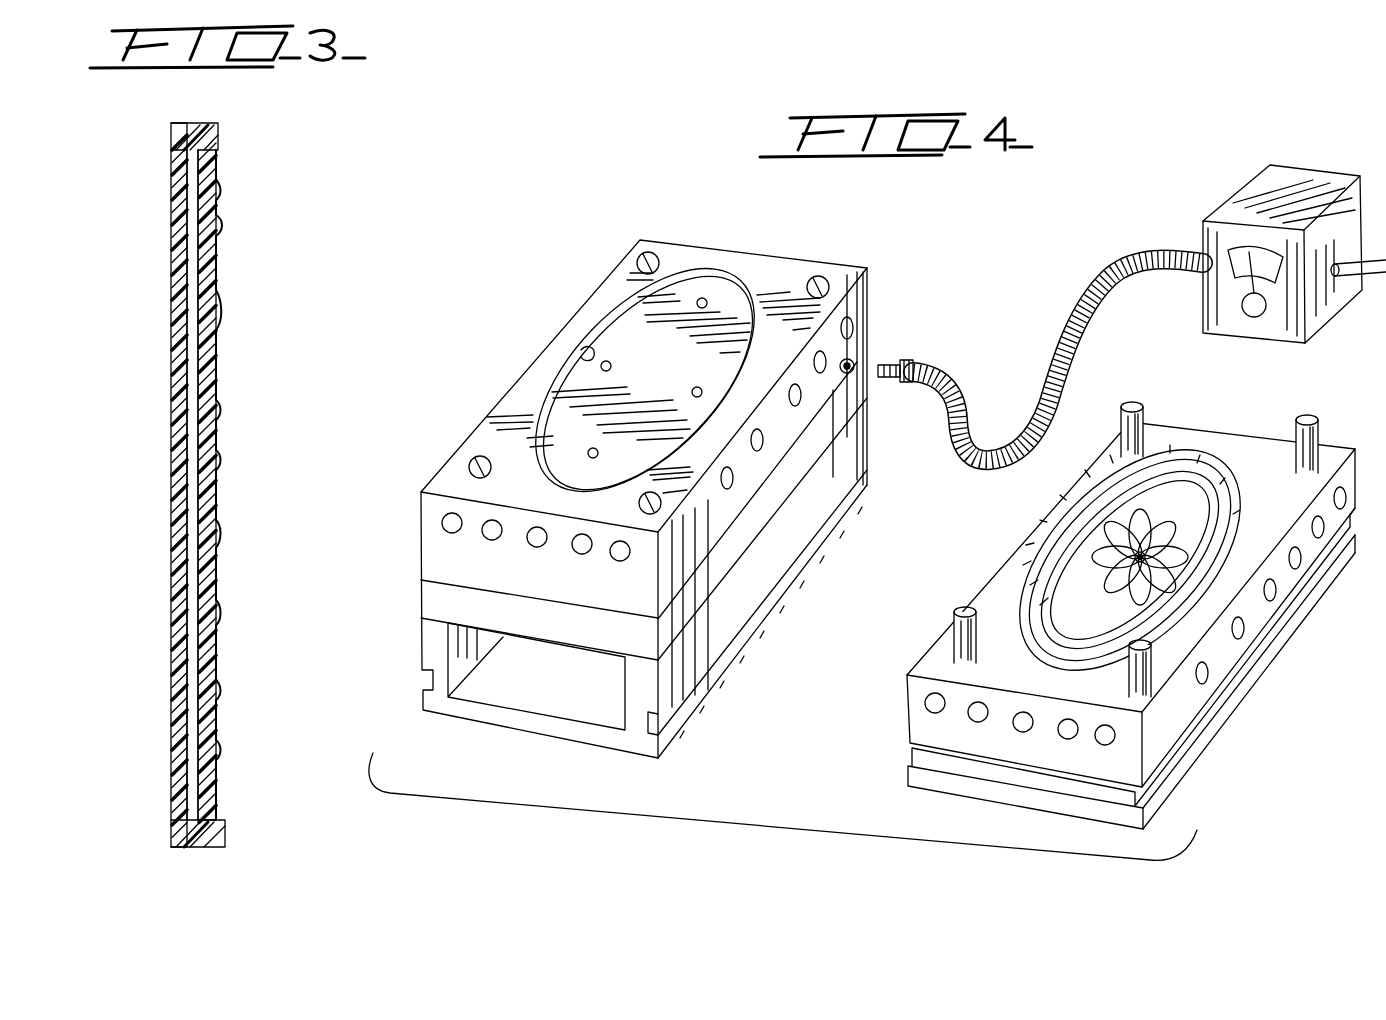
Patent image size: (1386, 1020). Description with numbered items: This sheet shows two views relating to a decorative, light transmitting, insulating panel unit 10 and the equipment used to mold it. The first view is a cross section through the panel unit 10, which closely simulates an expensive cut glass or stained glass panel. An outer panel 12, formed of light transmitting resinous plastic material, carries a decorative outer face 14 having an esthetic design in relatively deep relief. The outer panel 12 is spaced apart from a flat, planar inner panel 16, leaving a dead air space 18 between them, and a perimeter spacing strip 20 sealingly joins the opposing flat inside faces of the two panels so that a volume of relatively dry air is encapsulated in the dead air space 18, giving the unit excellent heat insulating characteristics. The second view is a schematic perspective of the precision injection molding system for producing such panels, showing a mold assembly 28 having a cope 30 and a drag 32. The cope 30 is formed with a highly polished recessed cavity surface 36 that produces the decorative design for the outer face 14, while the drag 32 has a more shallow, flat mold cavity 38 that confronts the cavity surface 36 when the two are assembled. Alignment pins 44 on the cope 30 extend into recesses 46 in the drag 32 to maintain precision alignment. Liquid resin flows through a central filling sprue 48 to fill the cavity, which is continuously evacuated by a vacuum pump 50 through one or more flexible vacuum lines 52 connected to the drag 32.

In FIG. 3, the insulating panel unit 10 is at (194, 481).
In FIG. 3, the outer panel 12 is at (208, 342).
In FIG. 3, the decorative outer face 14 is at (214, 247).
In FIG. 3, the inner panel 16 is at (186, 333).
In FIG. 3, the dead air space 18 is at (198, 374).
In FIG. 3, the perimeter spacing strip 20 is at (186, 124).
In FIG. 4, the mold assembly 28 is at (748, 858).
In FIG. 4, the cope 30 is at (1119, 598).
In FIG. 4, the drag 32 is at (623, 484).
In FIG. 4, the recessed cavity surface 36 is at (1200, 522).
In FIG. 4, the mold cavity 38 is at (587, 352).
In FIG. 4, the alignment pins 44 is at (1140, 407).
In FIG. 4, the recesses 46 is at (640, 263).
In FIG. 4, the central filling sprue 48 is at (1190, 542).
In FIG. 4, the vacuum pump 50 is at (1232, 218).
In FIG. 4, the flexible vacuum lines 52 is at (935, 370).